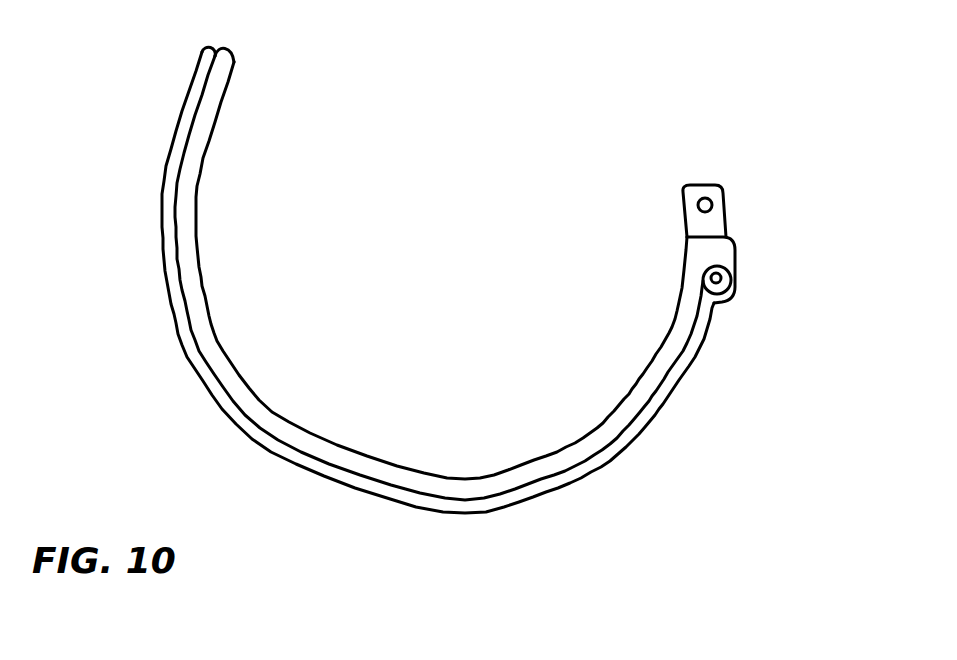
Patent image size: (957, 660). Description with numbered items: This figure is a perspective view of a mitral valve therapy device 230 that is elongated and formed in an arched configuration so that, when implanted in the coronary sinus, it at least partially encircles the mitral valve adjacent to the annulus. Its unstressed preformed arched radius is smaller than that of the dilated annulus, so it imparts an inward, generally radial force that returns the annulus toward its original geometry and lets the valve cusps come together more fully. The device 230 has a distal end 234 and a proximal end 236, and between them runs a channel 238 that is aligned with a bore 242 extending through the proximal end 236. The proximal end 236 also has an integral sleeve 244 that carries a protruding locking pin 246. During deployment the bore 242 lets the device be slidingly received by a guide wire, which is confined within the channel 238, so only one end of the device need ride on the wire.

The mitral valve therapy device 230 is at (445, 271).
The distal end 234 is at (203, 57).
The proximal end 236 is at (764, 228).
The channel 238 is at (425, 271).
The bore 242 is at (719, 296).
The integral sleeve 244 is at (720, 215).
The locking pin 246 is at (707, 196).